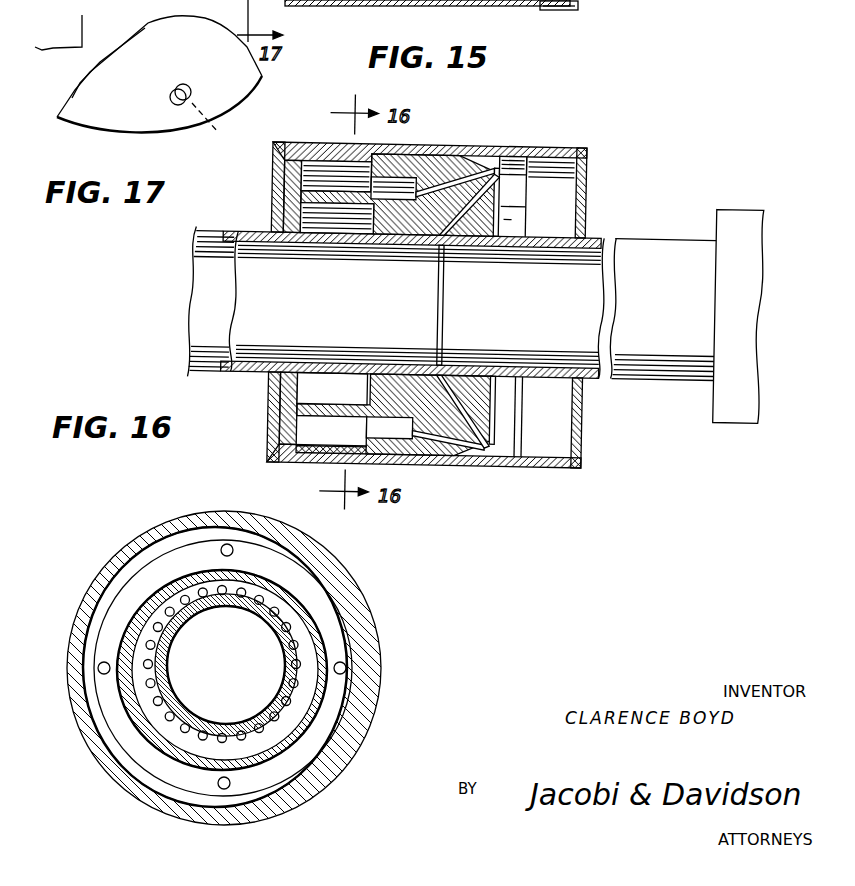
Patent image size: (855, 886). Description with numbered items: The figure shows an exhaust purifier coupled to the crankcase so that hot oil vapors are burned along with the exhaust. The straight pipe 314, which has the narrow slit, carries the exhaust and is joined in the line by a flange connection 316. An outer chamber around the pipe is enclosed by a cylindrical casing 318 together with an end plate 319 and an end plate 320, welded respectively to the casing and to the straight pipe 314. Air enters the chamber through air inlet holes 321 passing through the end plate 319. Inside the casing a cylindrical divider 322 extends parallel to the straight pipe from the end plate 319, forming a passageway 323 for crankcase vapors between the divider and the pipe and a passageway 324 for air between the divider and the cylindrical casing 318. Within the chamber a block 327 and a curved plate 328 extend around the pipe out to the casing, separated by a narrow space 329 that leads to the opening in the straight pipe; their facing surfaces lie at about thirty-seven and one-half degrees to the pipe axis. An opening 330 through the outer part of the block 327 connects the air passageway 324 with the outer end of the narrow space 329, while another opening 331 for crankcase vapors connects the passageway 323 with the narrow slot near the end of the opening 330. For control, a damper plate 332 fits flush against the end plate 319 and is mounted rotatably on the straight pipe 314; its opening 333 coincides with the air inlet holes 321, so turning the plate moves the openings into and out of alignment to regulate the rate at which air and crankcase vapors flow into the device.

In FIG. 15, the straight pipe 314 is at (222, 308).
In FIG. 16, the straight pipe 314 is at (282, 647).
In FIG. 15, the flange connection 316 is at (754, 208).
In FIG. 15, the cylindrical casing 318 is at (527, 141).
In FIG. 16, the cylindrical casing 318 is at (355, 587).
In FIG. 15, the end plate 319 is at (284, 390).
In FIG. 17, the end plate 319 is at (72, 87).
In FIG. 15, the end plate 320 is at (588, 203).
In FIG. 17, the air inlet hole 321 is at (217, 131).
In FIG. 15, the cylindrical divider 322 is at (310, 190).
In FIG. 16, the cylindrical divider 322 is at (318, 607).
In FIG. 15, the passageway 323 is at (305, 214).
In FIG. 15, the passageway 324 is at (322, 438).
In FIG. 15, the block 327 is at (438, 456).
In FIG. 15, the curved plate 328 is at (472, 206).
In FIG. 15, the narrow space 329 is at (492, 426).
In FIG. 15, the opening 330 is at (455, 172).
In FIG. 16, the opening 330 is at (229, 546).
In FIG. 15, the opening 331 is at (484, 163).
In FIG. 16, the opening 331 is at (258, 592).
In FIG. 15, the damper plate 332 is at (281, 142).
In FIG. 17, the damper plate 332 is at (118, 125).
In FIG. 17, the opening 333 is at (172, 106).